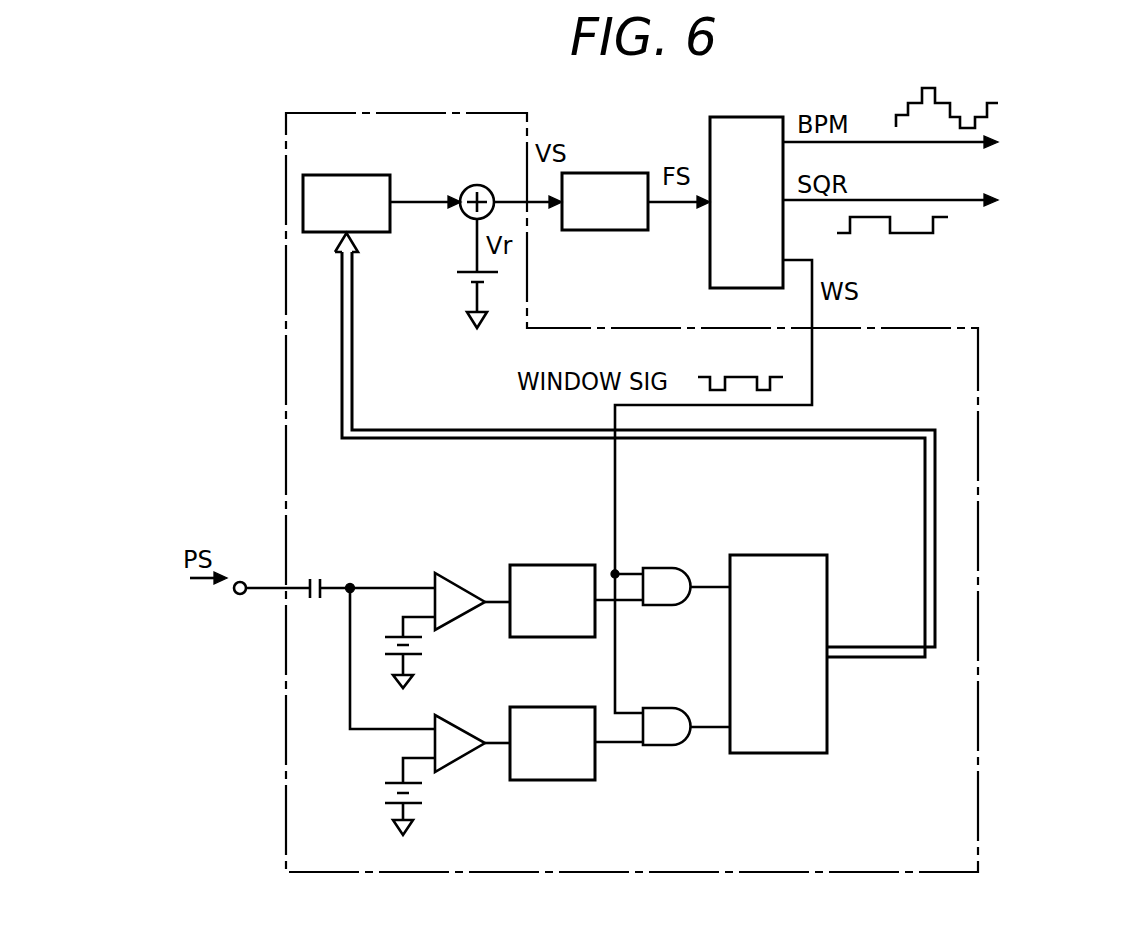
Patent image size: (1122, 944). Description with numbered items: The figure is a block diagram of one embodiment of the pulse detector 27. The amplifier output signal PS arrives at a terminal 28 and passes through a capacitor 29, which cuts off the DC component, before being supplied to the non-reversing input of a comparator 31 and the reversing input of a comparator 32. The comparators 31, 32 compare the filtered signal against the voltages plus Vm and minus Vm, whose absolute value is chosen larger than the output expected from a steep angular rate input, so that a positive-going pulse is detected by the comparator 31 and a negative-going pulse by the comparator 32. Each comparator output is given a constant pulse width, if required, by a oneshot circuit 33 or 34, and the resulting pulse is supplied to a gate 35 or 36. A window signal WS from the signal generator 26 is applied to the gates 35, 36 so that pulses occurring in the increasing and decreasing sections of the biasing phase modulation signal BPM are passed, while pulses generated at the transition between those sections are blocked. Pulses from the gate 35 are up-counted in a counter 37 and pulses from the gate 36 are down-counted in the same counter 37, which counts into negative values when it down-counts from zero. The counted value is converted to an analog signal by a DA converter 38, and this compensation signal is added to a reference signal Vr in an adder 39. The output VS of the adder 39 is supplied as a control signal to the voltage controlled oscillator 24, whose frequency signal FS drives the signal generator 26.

The voltage controlled oscillator 24 is at (619, 173).
The signal generator 26 is at (771, 117).
The pulse detector 27 is at (978, 480).
The terminal 28 is at (241, 581).
The capacitor 29 is at (313, 602).
The comparator 31 is at (467, 615).
The comparator 32 is at (468, 731).
The oneshot circuit 33 is at (525, 565).
The oneshot circuit 34 is at (527, 780).
The gate 35 is at (662, 568).
The gate 36 is at (686, 699).
The counter 37 is at (803, 555).
The DA converter 38 is at (372, 175).
The adder 39 is at (483, 186).